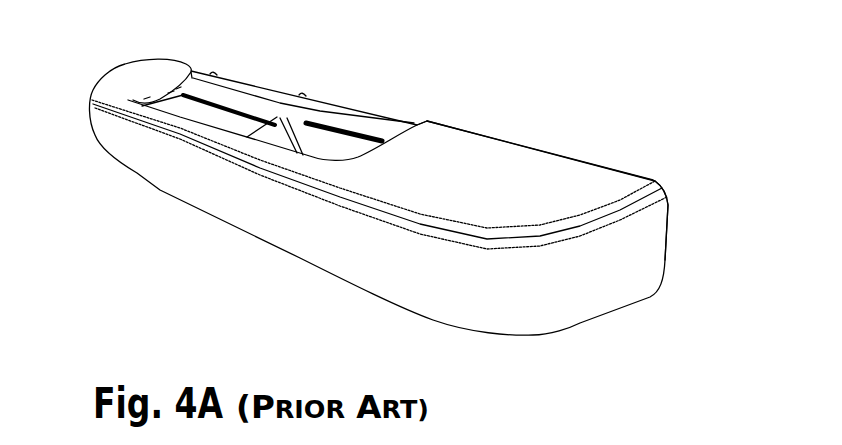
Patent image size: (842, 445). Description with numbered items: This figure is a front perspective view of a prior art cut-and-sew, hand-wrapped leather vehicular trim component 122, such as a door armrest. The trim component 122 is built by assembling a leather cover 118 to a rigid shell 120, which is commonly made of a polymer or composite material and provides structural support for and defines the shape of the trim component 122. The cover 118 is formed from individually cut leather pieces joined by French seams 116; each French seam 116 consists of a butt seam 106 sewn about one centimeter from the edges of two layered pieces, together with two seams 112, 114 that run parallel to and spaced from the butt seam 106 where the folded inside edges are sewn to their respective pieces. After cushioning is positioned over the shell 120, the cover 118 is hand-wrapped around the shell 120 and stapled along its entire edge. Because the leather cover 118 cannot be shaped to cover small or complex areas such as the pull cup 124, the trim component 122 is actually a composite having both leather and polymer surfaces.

The butt seam 106 is at (657, 181).
The parallel seam 112 is at (623, 221).
The parallel seam 114 is at (608, 204).
The French seam 116 is at (92, 100).
The cover 118 is at (472, 161).
The rigid shell 120 is at (286, 117).
The vehicular trim component 122 is at (653, 86).
The pull cup 124 is at (347, 150).